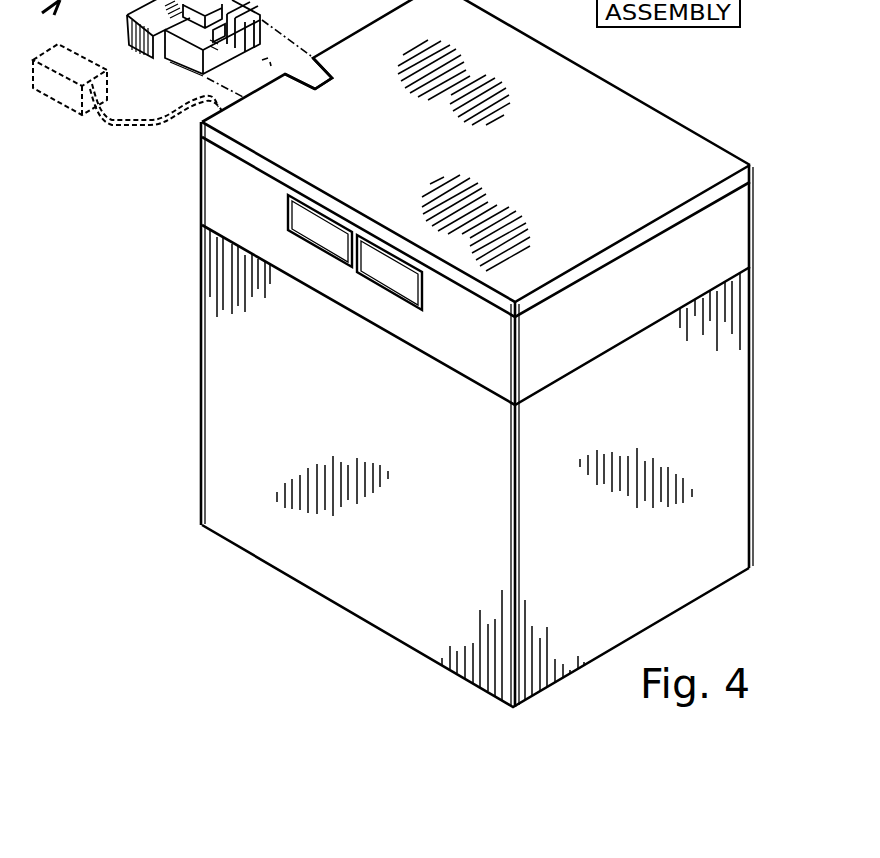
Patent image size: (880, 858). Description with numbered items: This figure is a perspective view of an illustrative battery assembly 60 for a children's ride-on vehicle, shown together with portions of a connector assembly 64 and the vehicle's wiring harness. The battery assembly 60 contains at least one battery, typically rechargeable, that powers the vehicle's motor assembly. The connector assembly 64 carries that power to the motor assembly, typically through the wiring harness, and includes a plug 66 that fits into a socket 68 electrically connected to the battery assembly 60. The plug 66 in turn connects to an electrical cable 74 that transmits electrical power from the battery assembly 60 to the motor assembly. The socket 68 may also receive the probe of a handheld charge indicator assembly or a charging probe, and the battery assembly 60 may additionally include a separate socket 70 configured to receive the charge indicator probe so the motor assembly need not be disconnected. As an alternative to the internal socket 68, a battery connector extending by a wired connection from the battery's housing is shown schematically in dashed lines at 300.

The battery assembly 60 is at (201, 425).
The connector assembly 64 is at (128, 83).
The plug 66 is at (168, 62).
The socket 68 is at (302, 55).
The socket 70 is at (299, 61).
The electrical cable 74 is at (101, 0).
The connector extending from battery housing 300 is at (80, 118).